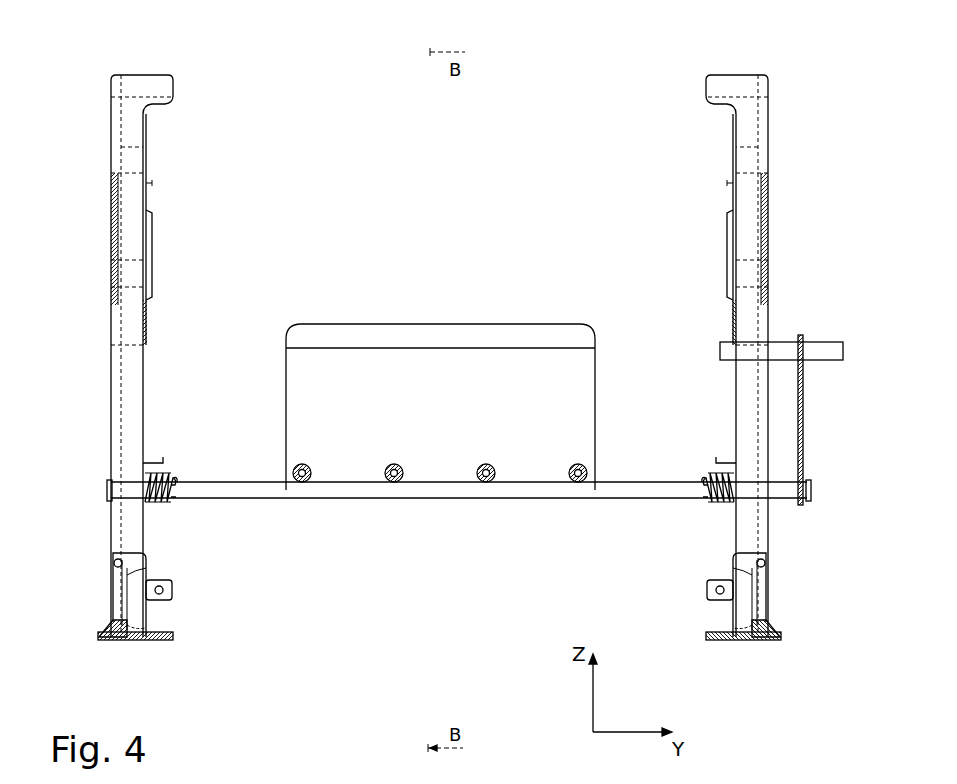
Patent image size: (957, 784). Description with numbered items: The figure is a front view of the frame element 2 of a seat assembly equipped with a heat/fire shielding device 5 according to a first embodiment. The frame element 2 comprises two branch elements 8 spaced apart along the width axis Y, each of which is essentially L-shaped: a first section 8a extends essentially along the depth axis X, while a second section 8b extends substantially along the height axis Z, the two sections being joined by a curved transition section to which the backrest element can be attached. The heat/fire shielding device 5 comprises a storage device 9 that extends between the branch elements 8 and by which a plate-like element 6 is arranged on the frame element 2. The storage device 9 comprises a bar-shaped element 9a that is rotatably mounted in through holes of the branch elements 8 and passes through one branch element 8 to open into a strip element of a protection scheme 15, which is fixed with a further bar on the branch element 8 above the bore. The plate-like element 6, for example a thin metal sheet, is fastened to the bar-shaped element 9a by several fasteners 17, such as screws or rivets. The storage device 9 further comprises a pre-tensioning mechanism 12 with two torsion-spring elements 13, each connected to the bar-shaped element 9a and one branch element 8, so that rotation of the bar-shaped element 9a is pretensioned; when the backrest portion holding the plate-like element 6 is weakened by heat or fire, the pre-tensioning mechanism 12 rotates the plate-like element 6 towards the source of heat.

The frame element 2 is at (762, 178).
The heat/fire shielding device 5 is at (422, 395).
The plate-like element 6 is at (440, 332).
The branch element 8 is at (111, 158).
The first section 8a is at (137, 641).
The second section 8b is at (113, 232).
The storage device 9 is at (459, 522).
The bar-shaped element 9a is at (211, 492).
The pre-tensioning mechanism 12 is at (439, 459).
The torsion-spring element 13 is at (163, 460).
The protection scheme 15 is at (803, 420).
The fastener 17 is at (390, 482).